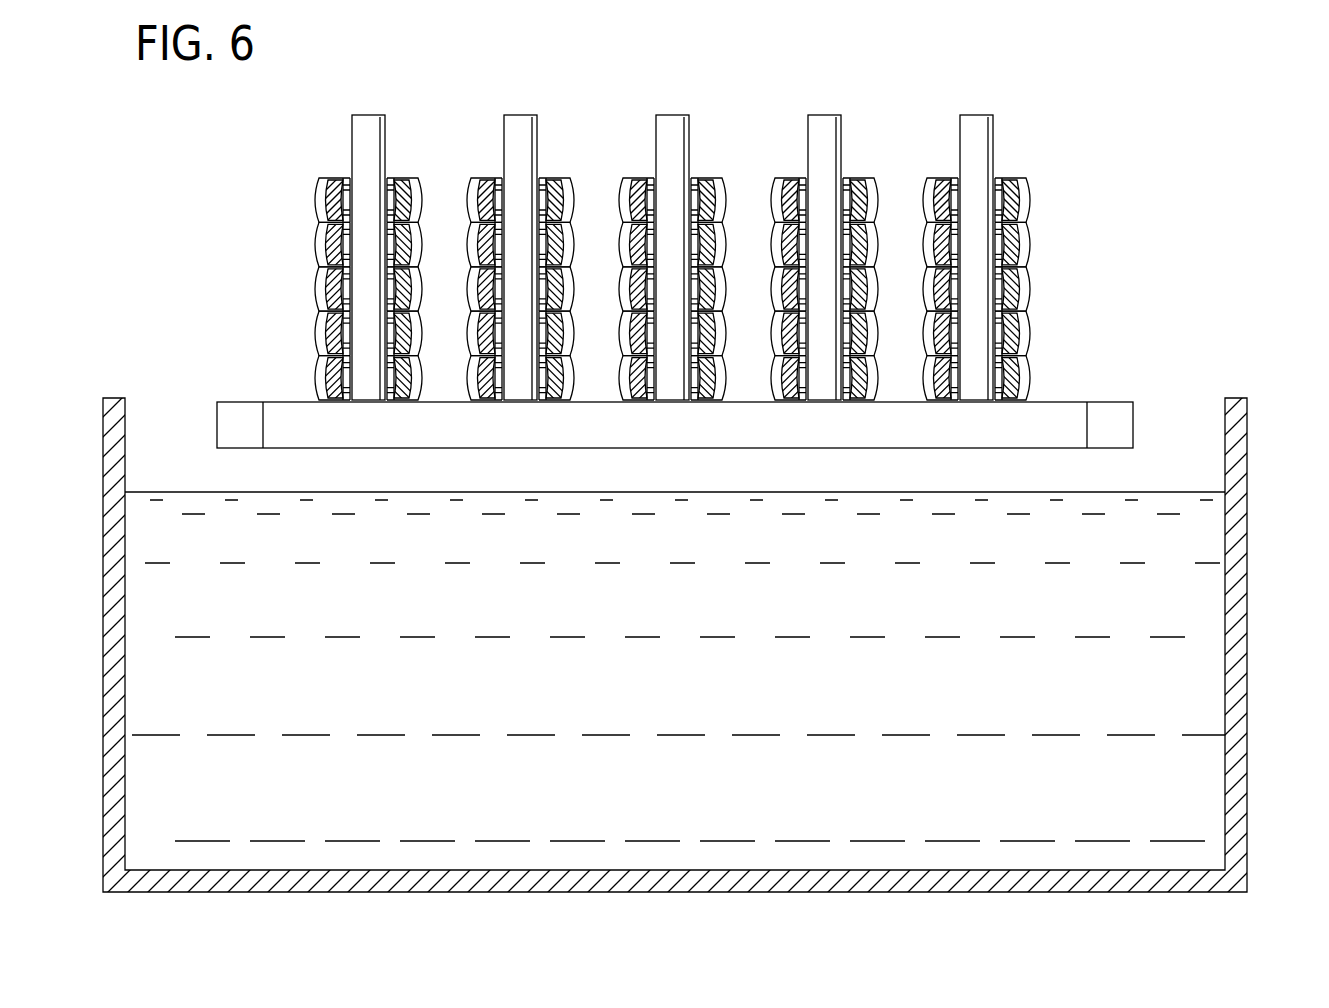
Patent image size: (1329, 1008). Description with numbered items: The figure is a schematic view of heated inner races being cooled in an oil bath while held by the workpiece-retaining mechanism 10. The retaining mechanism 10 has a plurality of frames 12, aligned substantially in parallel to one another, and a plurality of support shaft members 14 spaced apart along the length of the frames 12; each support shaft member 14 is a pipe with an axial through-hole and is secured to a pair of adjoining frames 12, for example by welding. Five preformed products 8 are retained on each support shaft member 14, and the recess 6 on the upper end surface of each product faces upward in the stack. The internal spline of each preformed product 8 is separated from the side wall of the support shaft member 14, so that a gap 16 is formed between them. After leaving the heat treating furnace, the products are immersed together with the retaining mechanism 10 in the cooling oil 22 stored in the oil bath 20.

The recess 6 is at (672, 261).
The preformed product 8 is at (692, 272).
The workpiece-retaining mechanism 10 is at (1148, 87).
The frame 12 is at (250, 422).
The support shaft member 14 is at (692, 228).
The gap 16 is at (695, 291).
The oil bath 20 is at (1237, 603).
The cooling oil 22 is at (1190, 795).